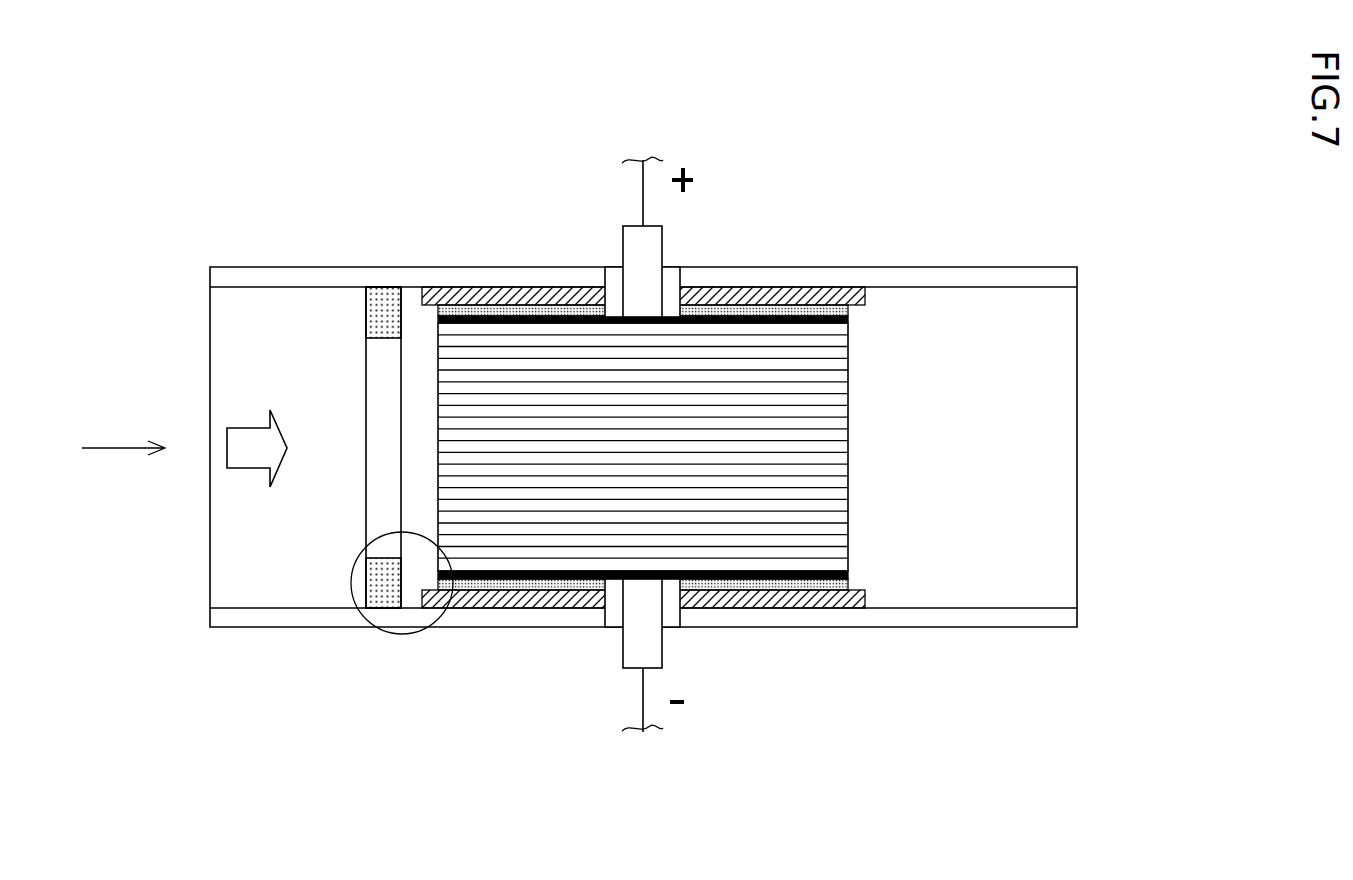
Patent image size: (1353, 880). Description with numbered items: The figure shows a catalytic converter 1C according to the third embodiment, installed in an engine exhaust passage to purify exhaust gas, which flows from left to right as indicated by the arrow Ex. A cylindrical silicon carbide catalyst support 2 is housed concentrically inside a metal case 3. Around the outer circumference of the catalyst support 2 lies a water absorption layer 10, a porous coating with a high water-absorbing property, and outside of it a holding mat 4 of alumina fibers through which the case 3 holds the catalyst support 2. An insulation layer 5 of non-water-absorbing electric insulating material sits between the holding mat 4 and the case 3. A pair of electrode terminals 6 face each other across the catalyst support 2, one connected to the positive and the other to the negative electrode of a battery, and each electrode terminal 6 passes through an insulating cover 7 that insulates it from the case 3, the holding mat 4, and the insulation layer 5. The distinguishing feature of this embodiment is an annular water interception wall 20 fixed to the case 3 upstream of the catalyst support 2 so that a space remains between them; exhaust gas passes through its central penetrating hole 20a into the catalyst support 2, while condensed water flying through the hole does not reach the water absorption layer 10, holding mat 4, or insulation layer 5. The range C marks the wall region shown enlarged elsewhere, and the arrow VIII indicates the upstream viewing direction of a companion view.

The catalytic converter 1C is at (245, 187).
The catalyst support 2 is at (843, 415).
The case 3 is at (1005, 278).
The holding mat 4 is at (849, 311).
The insulation layer 5 is at (866, 598).
The electrode terminal 6 is at (663, 246).
The cover 7 is at (612, 267).
The water absorption layer 10 is at (850, 577).
The water interception wall 20 is at (366, 524).
The penetrating hole 20a is at (380, 333).
The range C is at (402, 634).
The arrow Ex is at (257, 435).
The arrow VIII is at (97, 448).